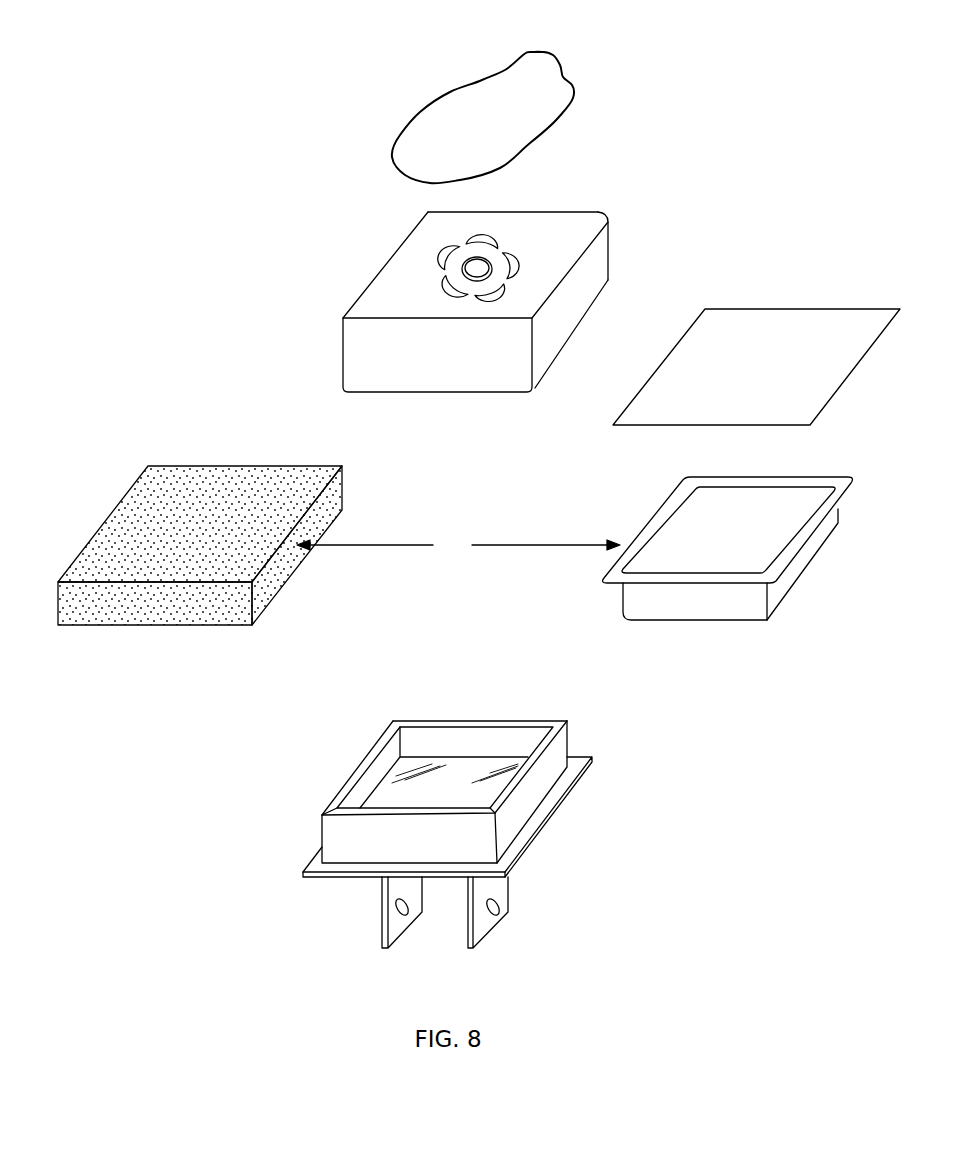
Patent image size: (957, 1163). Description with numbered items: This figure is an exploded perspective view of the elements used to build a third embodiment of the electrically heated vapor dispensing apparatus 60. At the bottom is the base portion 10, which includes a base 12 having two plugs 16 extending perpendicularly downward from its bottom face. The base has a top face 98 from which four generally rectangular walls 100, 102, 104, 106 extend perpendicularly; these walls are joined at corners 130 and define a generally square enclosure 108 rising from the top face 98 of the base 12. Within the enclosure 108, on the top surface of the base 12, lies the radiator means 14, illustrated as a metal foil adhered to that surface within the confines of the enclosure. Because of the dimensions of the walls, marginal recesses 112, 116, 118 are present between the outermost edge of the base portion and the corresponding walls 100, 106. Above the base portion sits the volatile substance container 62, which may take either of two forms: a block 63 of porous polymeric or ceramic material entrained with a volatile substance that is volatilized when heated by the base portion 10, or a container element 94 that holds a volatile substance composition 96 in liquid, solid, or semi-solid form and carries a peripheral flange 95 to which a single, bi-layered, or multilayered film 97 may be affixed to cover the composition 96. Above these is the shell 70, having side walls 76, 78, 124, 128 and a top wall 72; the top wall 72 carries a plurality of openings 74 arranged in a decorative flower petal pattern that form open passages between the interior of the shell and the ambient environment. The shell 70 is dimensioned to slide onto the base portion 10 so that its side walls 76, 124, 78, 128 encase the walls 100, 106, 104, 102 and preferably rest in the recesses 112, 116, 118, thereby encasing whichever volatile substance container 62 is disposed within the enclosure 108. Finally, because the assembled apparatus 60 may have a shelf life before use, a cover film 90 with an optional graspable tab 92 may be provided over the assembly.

The base portion 10 is at (483, 825).
The base 12 is at (446, 841).
The radiator means 14 is at (455, 801).
The plugs 16 is at (398, 940).
The electrically heated vapor dispensing apparatus 60 is at (733, 45).
The volatile substance container 62 is at (458, 548).
The block 63 is at (93, 617).
The shell 70 is at (431, 306).
The top wall 72 is at (593, 216).
The openings 74 is at (488, 229).
The side wall 76 is at (547, 348).
The side wall 78 is at (373, 279).
The cover film 90 is at (407, 138).
The graspable tab 92 is at (545, 56).
The container element 94 is at (725, 555).
The flange 95 is at (843, 480).
The volatile substance composition 96 is at (685, 512).
The film 97 is at (787, 322).
The top face 98 is at (315, 865).
The wall 100 is at (449, 797).
The wall 102 is at (458, 733).
The wall 104 is at (378, 763).
The wall 106 is at (358, 853).
The enclosure 108 is at (525, 737).
The marginal recess 112 is at (577, 781).
The marginal recess 116 is at (320, 847).
The marginal recess 118 is at (497, 720).
The side wall 124 is at (387, 394).
The side wall 128 is at (543, 211).
The inner corner 130 is at (343, 795).